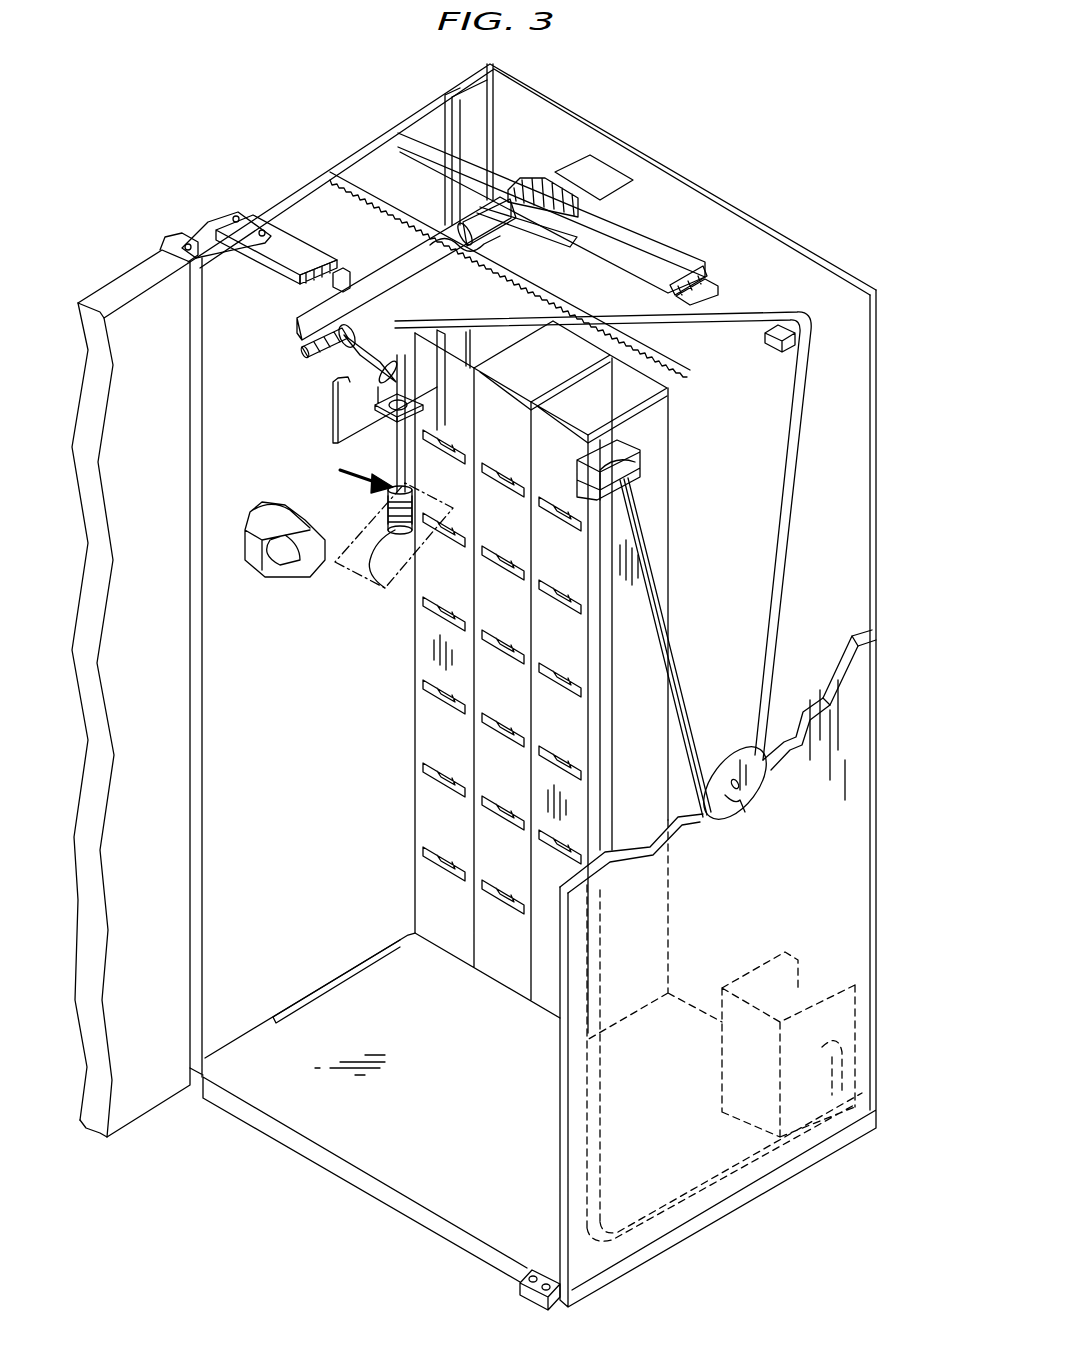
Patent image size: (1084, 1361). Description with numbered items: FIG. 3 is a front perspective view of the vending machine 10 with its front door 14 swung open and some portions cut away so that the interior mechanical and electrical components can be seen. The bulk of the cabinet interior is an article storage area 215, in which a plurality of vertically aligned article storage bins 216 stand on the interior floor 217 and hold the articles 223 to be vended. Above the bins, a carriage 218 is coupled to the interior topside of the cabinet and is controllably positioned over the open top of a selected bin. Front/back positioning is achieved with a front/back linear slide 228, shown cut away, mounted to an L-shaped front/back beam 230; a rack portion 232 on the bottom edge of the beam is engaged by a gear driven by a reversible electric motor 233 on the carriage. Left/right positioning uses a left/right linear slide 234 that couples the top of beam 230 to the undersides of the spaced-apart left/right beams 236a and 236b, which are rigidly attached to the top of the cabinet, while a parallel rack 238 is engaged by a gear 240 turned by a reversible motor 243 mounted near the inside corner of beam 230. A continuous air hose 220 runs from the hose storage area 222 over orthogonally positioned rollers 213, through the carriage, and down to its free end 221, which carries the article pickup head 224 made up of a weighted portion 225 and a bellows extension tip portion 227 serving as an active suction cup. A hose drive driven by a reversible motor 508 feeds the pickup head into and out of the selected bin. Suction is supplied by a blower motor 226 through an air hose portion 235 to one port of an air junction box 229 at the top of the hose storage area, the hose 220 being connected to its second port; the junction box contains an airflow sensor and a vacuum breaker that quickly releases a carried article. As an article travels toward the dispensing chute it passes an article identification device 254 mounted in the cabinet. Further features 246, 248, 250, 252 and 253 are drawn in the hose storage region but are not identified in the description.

The vending machine 10 is at (779, 101).
The door 14 is at (120, 282).
The orthogonally positioned rollers 213 is at (762, 340).
The article storage area 215 is at (329, 778).
The article storage bins 216 is at (543, 378).
The interior floor 217 is at (385, 1178).
The carriage 218 is at (333, 410).
The air hose 220 is at (755, 312).
The free end 221 is at (349, 475).
The hose storage area 222 is at (866, 632).
The articles 223 is at (383, 585).
The article pickup head 224 is at (363, 515).
The weighted portion 225 is at (412, 500).
The blower motor 226 is at (763, 958).
The bellows extension tip portion 227 is at (398, 530).
The front/back linear slide 228 is at (355, 290).
The air junction box 229 is at (628, 476).
The front/back beam 230 is at (600, 175).
The rack portion 232 is at (330, 380).
The reversible electric motor 233 is at (478, 372).
The left/right linear slide 234 is at (700, 280).
The air hose portion 235 is at (605, 745).
The left/right beam 236a is at (655, 240).
The left/right beam 236b is at (290, 245).
The rack 238 is at (560, 292).
The gear 240 is at (440, 240).
The reversible motor 243 is at (500, 236).
The bracket strip 246 is at (810, 703).
The bracket strip 248 is at (828, 700).
The cable assembly 250 is at (736, 643).
The pulley mount 252 is at (743, 815).
The pulley 253 is at (725, 756).
The article identification device 254 is at (262, 522).
The reversible motor 508 is at (345, 365).